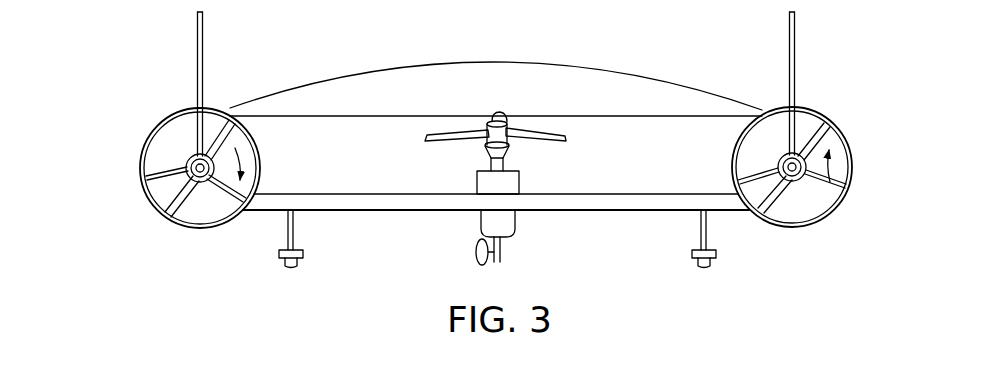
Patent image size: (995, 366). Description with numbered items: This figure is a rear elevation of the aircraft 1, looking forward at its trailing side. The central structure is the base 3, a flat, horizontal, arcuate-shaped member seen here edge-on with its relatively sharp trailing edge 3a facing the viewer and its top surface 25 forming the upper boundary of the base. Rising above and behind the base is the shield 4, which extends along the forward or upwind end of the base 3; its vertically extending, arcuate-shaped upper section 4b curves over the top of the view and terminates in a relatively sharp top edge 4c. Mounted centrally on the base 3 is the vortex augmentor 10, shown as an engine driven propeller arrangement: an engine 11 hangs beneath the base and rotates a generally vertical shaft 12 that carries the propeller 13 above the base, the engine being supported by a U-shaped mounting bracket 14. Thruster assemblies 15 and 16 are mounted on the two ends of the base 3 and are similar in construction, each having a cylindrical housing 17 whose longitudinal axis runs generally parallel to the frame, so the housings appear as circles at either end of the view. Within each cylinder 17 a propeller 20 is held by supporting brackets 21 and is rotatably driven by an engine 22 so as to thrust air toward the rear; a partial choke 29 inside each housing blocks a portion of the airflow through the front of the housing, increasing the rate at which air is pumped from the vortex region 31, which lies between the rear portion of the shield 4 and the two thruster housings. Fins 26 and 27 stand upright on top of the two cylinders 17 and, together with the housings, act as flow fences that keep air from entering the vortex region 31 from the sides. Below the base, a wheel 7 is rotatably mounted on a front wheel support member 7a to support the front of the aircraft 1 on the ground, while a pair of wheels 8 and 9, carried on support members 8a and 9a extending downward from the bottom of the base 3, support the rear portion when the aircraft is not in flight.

The aircraft 1 is at (166, 101).
The base 3 is at (366, 214).
The trailing edge 3a is at (408, 200).
The shield 4 is at (520, 60).
The upper section 4b is at (666, 100).
The top edge 4c is at (436, 66).
The wheel 7 is at (483, 266).
The front wheel support member 7a is at (500, 254).
The wheel 8 is at (291, 270).
The support member 8a is at (283, 225).
The wheel 9 is at (712, 267).
The support member 9a is at (710, 225).
The vortex augmentor 10 is at (474, 158).
The engine 11 is at (505, 226).
The shaft 12 is at (500, 163).
The propeller 13 is at (530, 133).
The U-shaped mounting bracket 14 is at (520, 176).
The thruster assembly 15 is at (152, 121).
The thruster assembly 16 is at (856, 150).
The cylindrical housing 17 is at (140, 176).
The propeller 20 is at (190, 206).
The supporting brackets 21 is at (167, 211).
The engine 22 is at (186, 162).
The top surface 25 is at (312, 193).
The fin 26 is at (196, 26).
The fin 27 is at (797, 24).
The partial choke 29 is at (246, 146).
The vortex region 31 is at (646, 168).